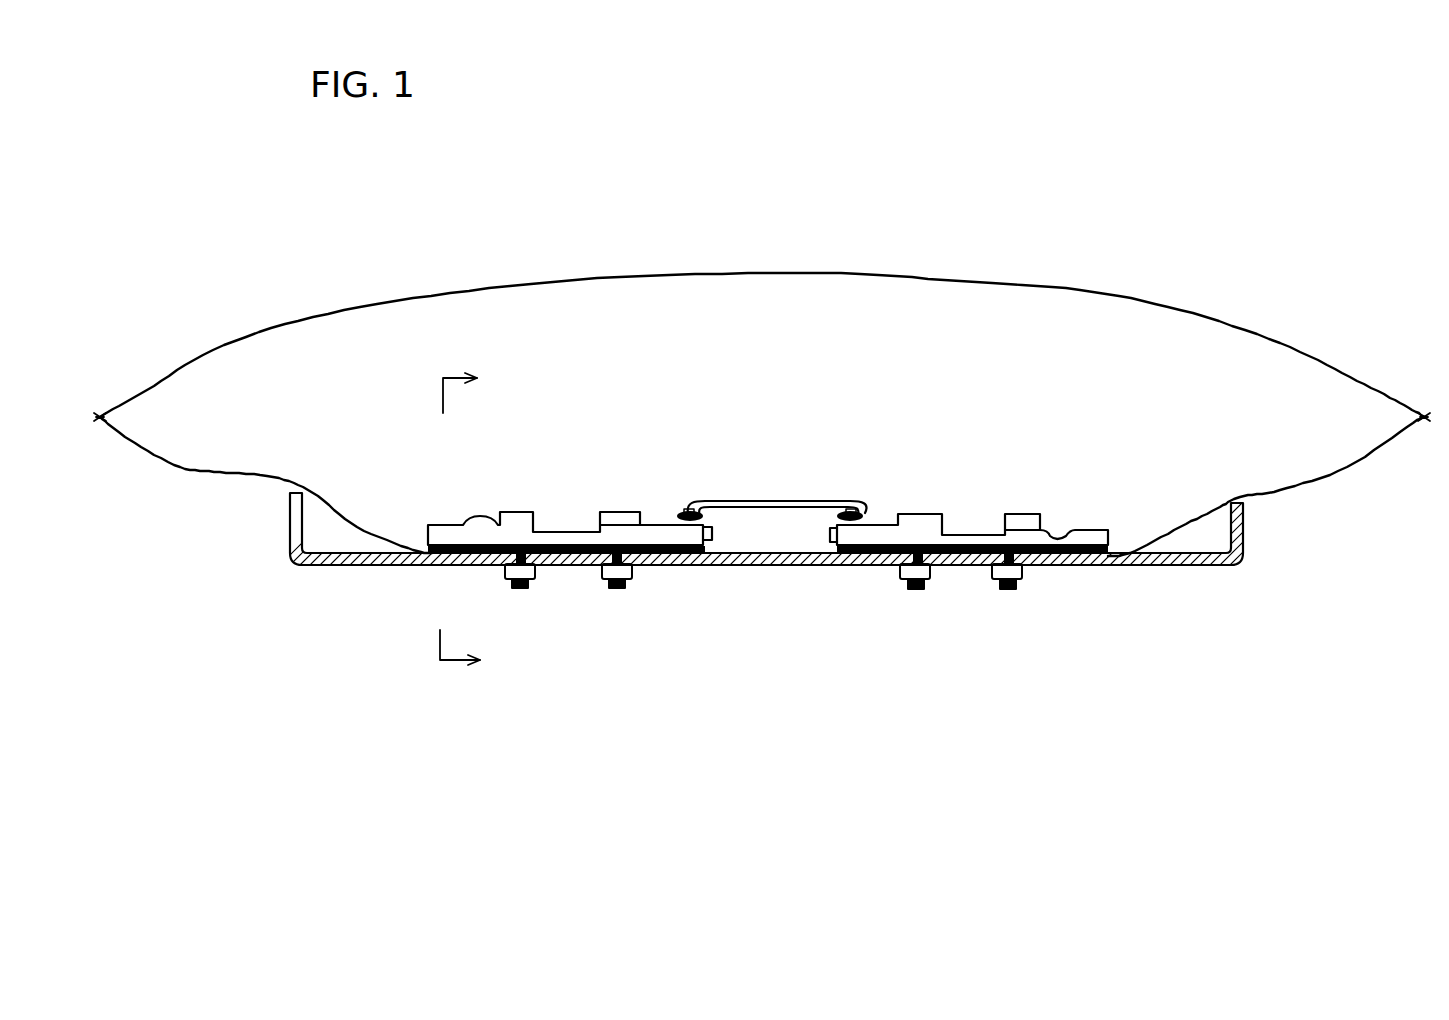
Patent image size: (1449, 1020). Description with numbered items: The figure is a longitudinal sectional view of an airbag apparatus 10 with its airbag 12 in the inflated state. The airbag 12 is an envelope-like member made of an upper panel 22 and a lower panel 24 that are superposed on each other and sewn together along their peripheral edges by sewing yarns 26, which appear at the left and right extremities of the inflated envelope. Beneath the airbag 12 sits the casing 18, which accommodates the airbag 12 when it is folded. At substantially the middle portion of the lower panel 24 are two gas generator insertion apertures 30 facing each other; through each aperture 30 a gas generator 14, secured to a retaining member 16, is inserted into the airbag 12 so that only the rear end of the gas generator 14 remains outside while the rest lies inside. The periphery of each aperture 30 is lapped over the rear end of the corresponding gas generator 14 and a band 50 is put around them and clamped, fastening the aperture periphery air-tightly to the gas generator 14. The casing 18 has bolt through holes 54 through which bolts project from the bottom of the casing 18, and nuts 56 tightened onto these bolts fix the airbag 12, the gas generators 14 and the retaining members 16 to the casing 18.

The airbag apparatus 10 is at (1111, 243).
The airbag 12 is at (963, 278).
The gas generator 14 is at (563, 516).
The retaining member 16 is at (620, 516).
The casing 18 is at (1183, 566).
The upper panel 22 is at (457, 292).
The lower panel 24 is at (197, 470).
The sewing yarn 26 is at (101, 413).
The gas generator insertion aperture 30 is at (657, 516).
The band 50 is at (705, 505).
The bolt through hole 54 is at (498, 566).
The nut 56 is at (506, 578).